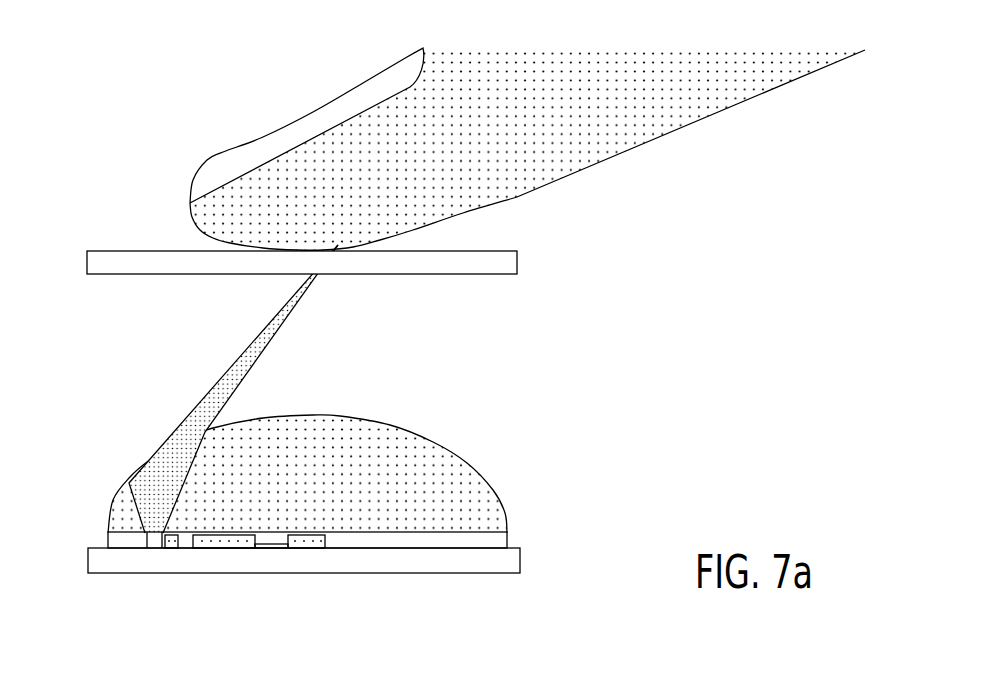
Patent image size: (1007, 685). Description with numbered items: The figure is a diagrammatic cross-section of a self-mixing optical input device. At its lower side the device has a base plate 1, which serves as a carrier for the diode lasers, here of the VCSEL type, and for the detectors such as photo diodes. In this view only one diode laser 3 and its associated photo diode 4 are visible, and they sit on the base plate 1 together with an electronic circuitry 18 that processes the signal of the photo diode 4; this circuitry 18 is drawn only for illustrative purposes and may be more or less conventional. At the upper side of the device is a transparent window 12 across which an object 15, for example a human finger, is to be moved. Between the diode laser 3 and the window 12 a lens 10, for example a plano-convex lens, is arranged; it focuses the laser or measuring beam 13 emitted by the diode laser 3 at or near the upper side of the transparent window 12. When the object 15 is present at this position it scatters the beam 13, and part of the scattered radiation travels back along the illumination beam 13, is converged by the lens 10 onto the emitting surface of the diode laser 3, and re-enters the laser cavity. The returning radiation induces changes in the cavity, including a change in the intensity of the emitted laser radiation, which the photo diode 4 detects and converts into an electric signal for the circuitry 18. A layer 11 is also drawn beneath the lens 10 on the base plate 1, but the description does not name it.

The base plate 1 is at (508, 560).
The diode laser 3 is at (155, 548).
The photo diode 4 is at (173, 547).
The lens 10 is at (417, 465).
The cover layer 11 is at (498, 538).
The transparent window 12 is at (500, 260).
The laser beam 13 is at (230, 373).
The object 15 is at (615, 112).
The electronic circuitry 18 is at (232, 542).